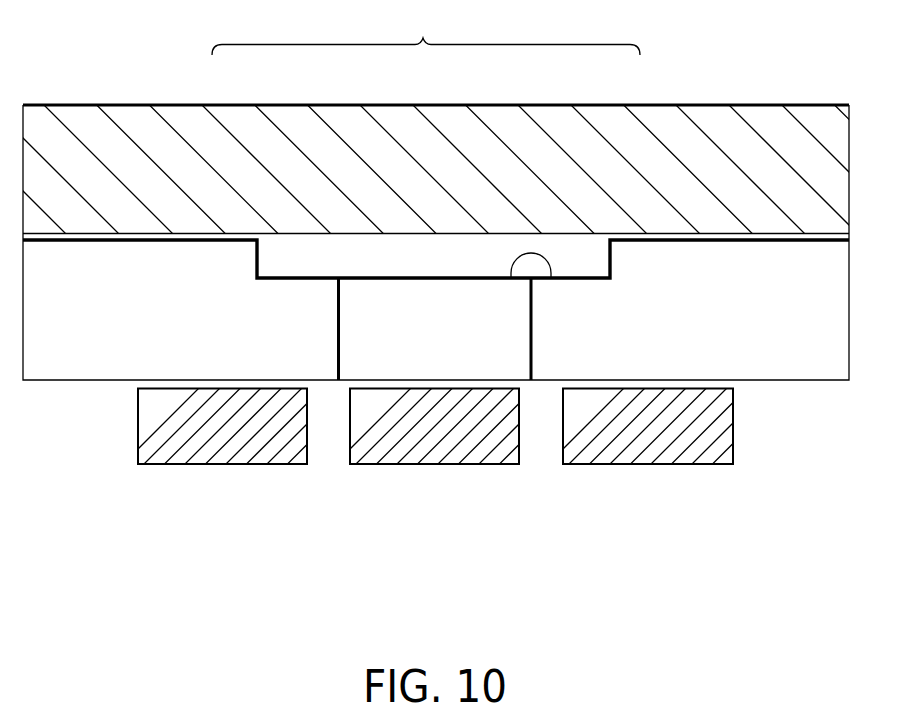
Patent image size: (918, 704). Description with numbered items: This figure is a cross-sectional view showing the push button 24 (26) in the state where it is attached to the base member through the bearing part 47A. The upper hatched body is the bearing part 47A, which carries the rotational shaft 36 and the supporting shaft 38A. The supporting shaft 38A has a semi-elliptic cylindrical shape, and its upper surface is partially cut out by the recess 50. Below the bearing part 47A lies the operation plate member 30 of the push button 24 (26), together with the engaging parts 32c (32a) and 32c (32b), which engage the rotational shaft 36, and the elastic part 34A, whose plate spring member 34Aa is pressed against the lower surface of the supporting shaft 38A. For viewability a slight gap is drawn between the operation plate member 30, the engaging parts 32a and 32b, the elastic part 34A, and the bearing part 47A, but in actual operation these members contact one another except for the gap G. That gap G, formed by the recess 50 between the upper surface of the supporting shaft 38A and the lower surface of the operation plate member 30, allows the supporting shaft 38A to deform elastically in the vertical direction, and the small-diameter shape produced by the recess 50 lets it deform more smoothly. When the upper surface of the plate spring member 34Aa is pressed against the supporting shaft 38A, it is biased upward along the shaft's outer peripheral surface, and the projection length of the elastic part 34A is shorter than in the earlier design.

The push button 24 is at (121, 102).
The push button 26 is at (436, 242).
The operation plate member 30 is at (720, 128).
The rotational shaft 36 is at (237, 265).
The supporting shaft 38A is at (433, 300).
The bearing part 47A is at (426, 31).
The recess 50 is at (552, 280).
The gap G is at (374, 256).
The engaging part 32c is at (221, 438).
The engaging part 32a is at (253, 463).
The engaging part 32b is at (678, 463).
The plate spring member 34Aa is at (436, 438).
The elastic part 34A is at (465, 463).